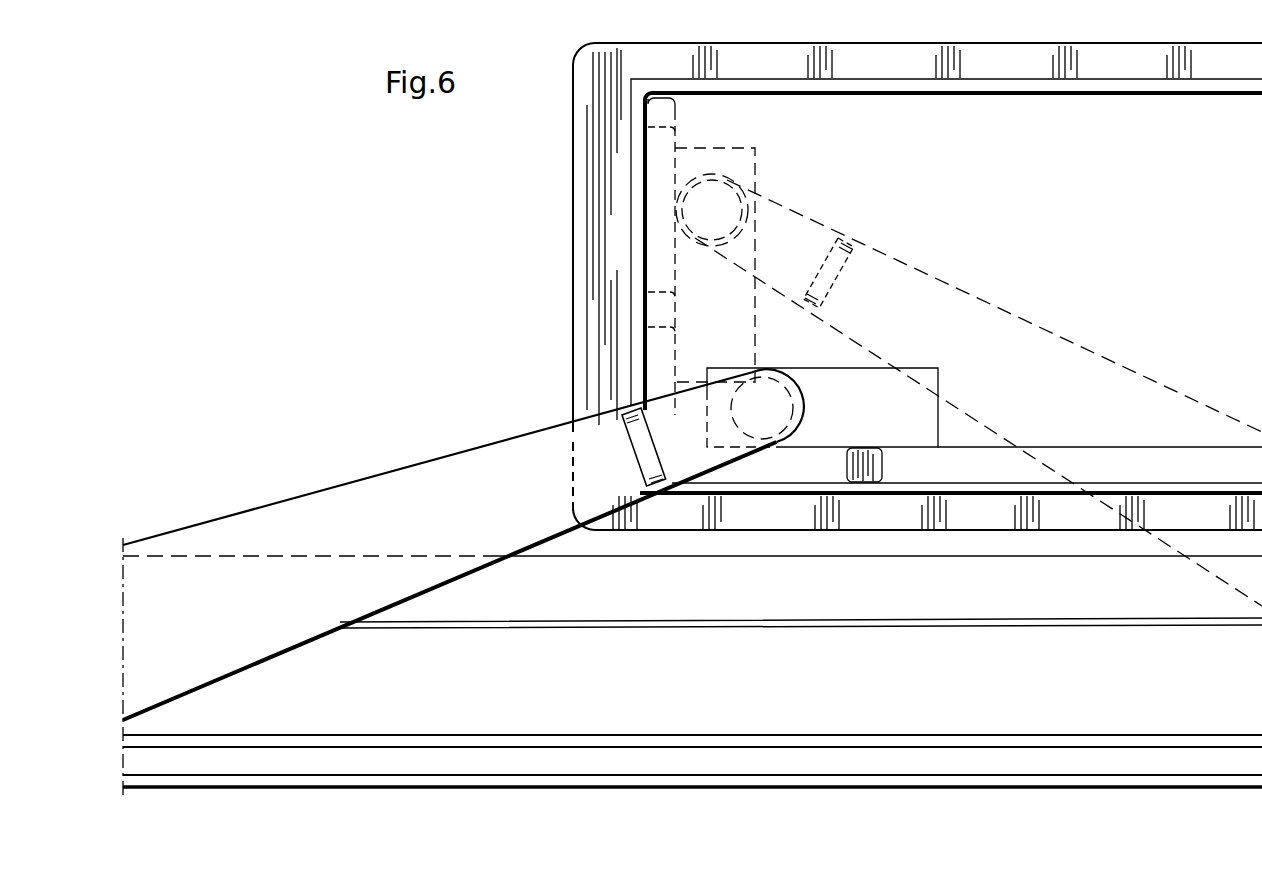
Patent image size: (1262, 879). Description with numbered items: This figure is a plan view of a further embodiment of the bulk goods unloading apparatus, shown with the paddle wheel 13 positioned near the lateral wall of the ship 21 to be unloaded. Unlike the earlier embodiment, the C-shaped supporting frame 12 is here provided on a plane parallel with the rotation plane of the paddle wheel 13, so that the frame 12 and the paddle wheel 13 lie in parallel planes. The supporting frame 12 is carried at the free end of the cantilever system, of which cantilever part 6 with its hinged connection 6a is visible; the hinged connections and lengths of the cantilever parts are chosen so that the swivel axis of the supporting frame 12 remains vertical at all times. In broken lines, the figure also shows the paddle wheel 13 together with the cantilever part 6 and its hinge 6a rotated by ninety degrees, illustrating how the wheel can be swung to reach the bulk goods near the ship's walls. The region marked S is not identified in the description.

The cantilever part 6 is at (488, 509).
The hinged connection 6a is at (850, 245).
The C-shaped supporting frame 12 is at (727, 324).
The paddle wheel 13 is at (653, 153).
The ship 21 is at (1082, 47).
The interior space S is at (1159, 247).